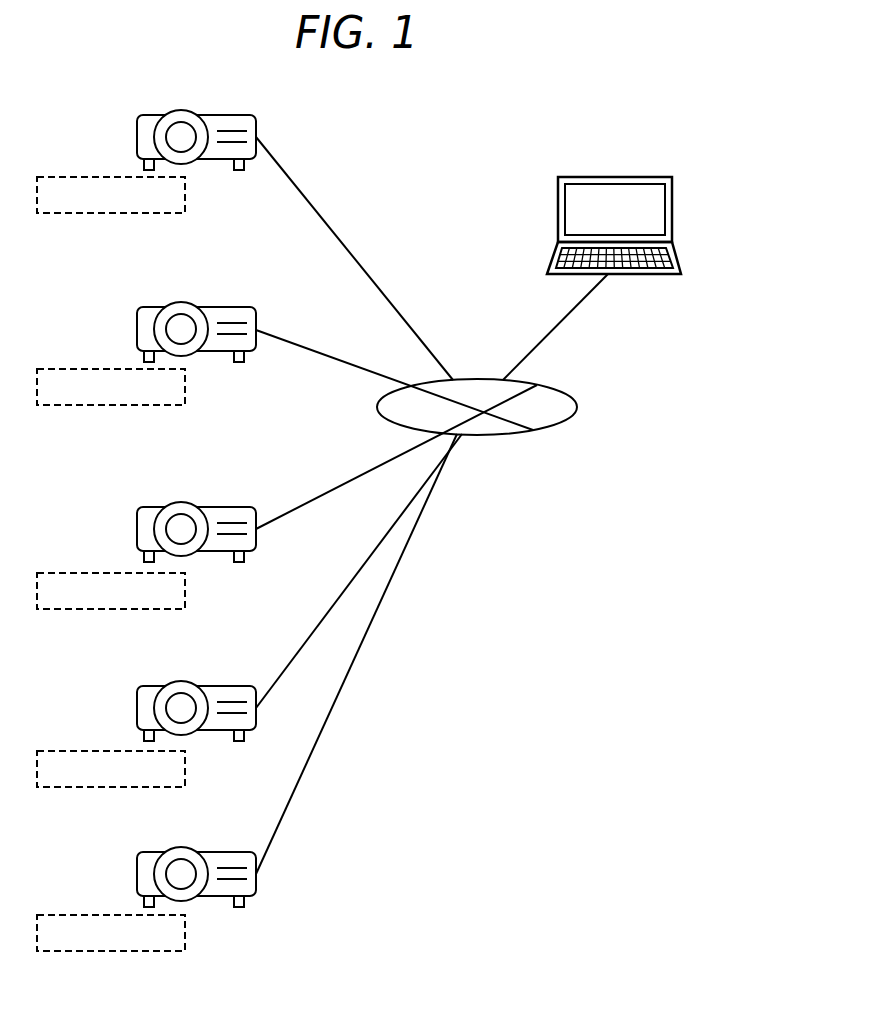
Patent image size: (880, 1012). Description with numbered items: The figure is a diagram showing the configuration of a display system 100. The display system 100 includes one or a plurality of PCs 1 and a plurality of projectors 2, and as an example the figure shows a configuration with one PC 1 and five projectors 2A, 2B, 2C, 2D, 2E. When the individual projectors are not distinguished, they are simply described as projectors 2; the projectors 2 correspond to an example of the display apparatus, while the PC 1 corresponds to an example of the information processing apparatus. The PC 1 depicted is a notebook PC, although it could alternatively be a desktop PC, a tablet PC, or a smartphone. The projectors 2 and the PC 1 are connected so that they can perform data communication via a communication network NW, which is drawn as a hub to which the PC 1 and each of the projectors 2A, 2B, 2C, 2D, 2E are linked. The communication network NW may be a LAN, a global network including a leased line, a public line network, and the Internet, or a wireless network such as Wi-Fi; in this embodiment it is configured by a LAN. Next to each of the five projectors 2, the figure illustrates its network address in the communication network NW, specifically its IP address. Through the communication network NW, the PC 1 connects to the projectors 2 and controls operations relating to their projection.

The display system 100 is at (513, 133).
The PC 1 is at (553, 253).
The projector 2 is at (198, 529).
The projector 2A is at (221, 161).
The projector 2B is at (221, 353).
The projector 2C is at (221, 553).
The projector 2D is at (221, 732).
The projector 2E is at (221, 898).
The communication network NW is at (566, 393).